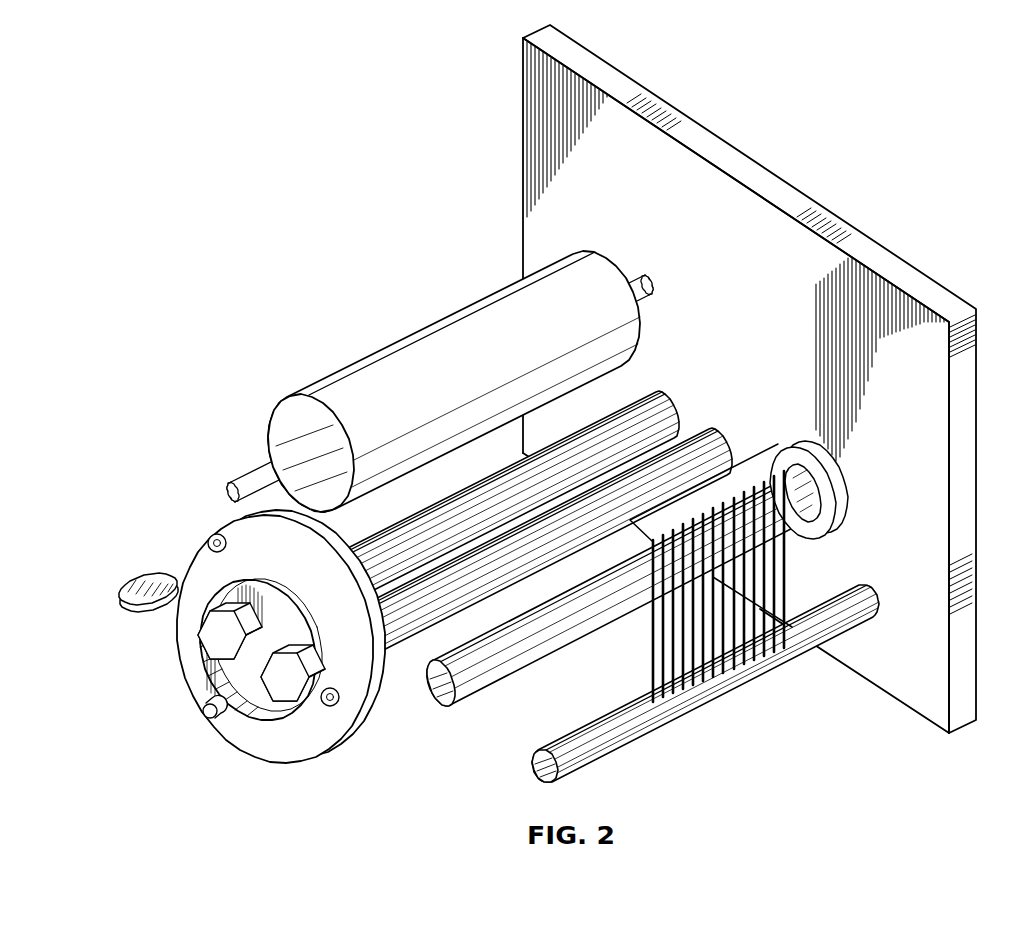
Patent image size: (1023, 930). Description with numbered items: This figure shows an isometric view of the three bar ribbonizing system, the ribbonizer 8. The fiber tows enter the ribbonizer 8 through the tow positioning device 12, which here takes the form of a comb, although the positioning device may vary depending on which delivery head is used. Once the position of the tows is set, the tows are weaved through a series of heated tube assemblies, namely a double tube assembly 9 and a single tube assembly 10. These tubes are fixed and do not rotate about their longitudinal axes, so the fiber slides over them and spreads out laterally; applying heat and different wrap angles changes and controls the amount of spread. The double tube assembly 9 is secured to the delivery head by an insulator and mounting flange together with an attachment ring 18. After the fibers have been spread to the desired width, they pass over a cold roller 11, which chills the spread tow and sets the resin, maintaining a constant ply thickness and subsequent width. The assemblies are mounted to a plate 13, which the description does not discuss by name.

The ribbonizer 8 is at (240, 148).
The double tube assembly 9 is at (373, 570).
The single tube assembly 10 is at (487, 663).
The cold roller 11 is at (450, 347).
The tow positioning device 12 is at (747, 660).
The mounting plate 13 is at (598, 70).
The attachment ring 18 is at (290, 745).